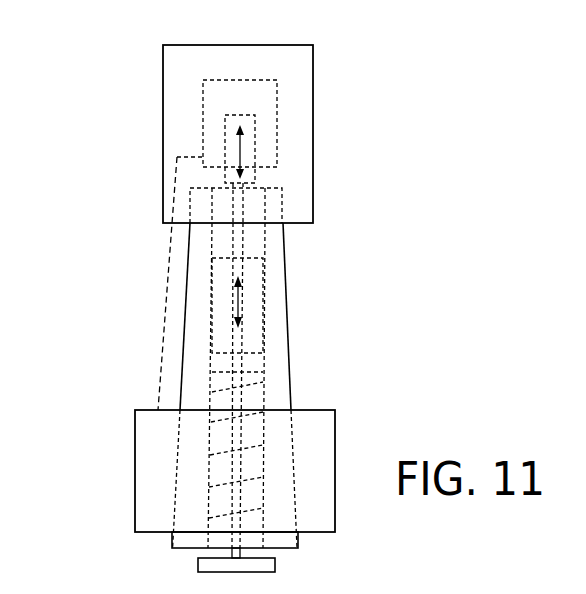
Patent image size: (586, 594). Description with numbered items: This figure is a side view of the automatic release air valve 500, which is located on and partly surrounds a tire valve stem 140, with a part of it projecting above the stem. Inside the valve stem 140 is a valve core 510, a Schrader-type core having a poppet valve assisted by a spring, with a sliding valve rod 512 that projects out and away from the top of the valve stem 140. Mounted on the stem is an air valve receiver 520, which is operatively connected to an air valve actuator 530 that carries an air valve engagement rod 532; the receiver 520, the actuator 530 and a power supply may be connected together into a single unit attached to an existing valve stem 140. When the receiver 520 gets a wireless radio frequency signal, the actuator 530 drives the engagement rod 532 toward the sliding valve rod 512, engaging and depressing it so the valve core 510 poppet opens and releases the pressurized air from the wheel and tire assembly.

The automatic release air valve 500 is at (124, 93).
The air valve actuator 530 is at (270, 92).
The air valve engagement rod 532 is at (240, 176).
The sliding valve rod 512 is at (237, 195).
The valve stem 140 is at (273, 307).
The valve core 510 is at (220, 318).
The air valve receiver 520 is at (148, 452).